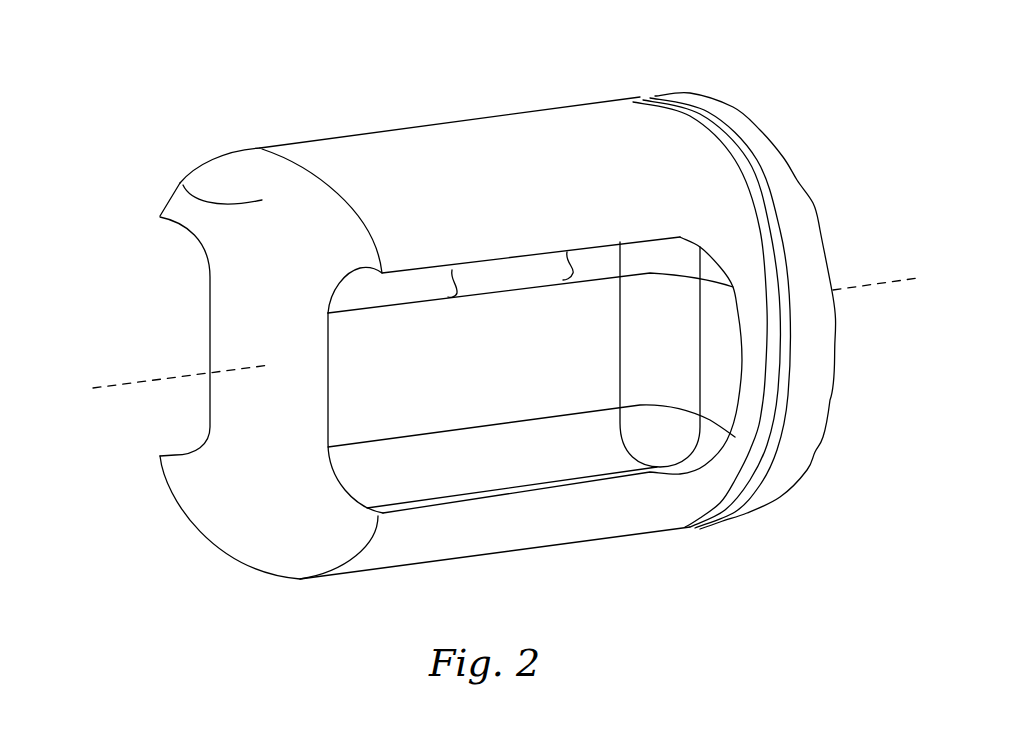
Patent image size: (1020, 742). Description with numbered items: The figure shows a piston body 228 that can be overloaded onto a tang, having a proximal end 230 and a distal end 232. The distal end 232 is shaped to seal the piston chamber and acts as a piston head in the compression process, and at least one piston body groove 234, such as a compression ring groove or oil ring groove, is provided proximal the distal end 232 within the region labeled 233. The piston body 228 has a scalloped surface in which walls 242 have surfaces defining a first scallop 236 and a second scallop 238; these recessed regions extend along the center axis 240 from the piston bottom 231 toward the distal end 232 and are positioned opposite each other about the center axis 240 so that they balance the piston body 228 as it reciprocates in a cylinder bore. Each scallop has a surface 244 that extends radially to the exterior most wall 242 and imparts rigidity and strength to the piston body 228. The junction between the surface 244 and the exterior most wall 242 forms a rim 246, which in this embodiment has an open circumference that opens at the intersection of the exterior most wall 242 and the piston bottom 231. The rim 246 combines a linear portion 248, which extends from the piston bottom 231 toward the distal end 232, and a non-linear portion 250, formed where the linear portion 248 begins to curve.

The piston body 228 is at (757, 83).
The proximal end 230 is at (132, 138).
The piston bottom 231 is at (183, 185).
The distal end 232 is at (777, 563).
The flange rim 233 is at (807, 197).
The piston body groove 234 is at (773, 268).
The first scallop 236 is at (372, 380).
The second scallop 238 is at (202, 287).
The center axis 240 is at (139, 383).
The exterior most wall 242 is at (423, 140).
The surface 244 is at (417, 483).
The rim 246 is at (160, 217).
The linear portion 248 is at (463, 502).
The non-linear portion 250 is at (742, 393).